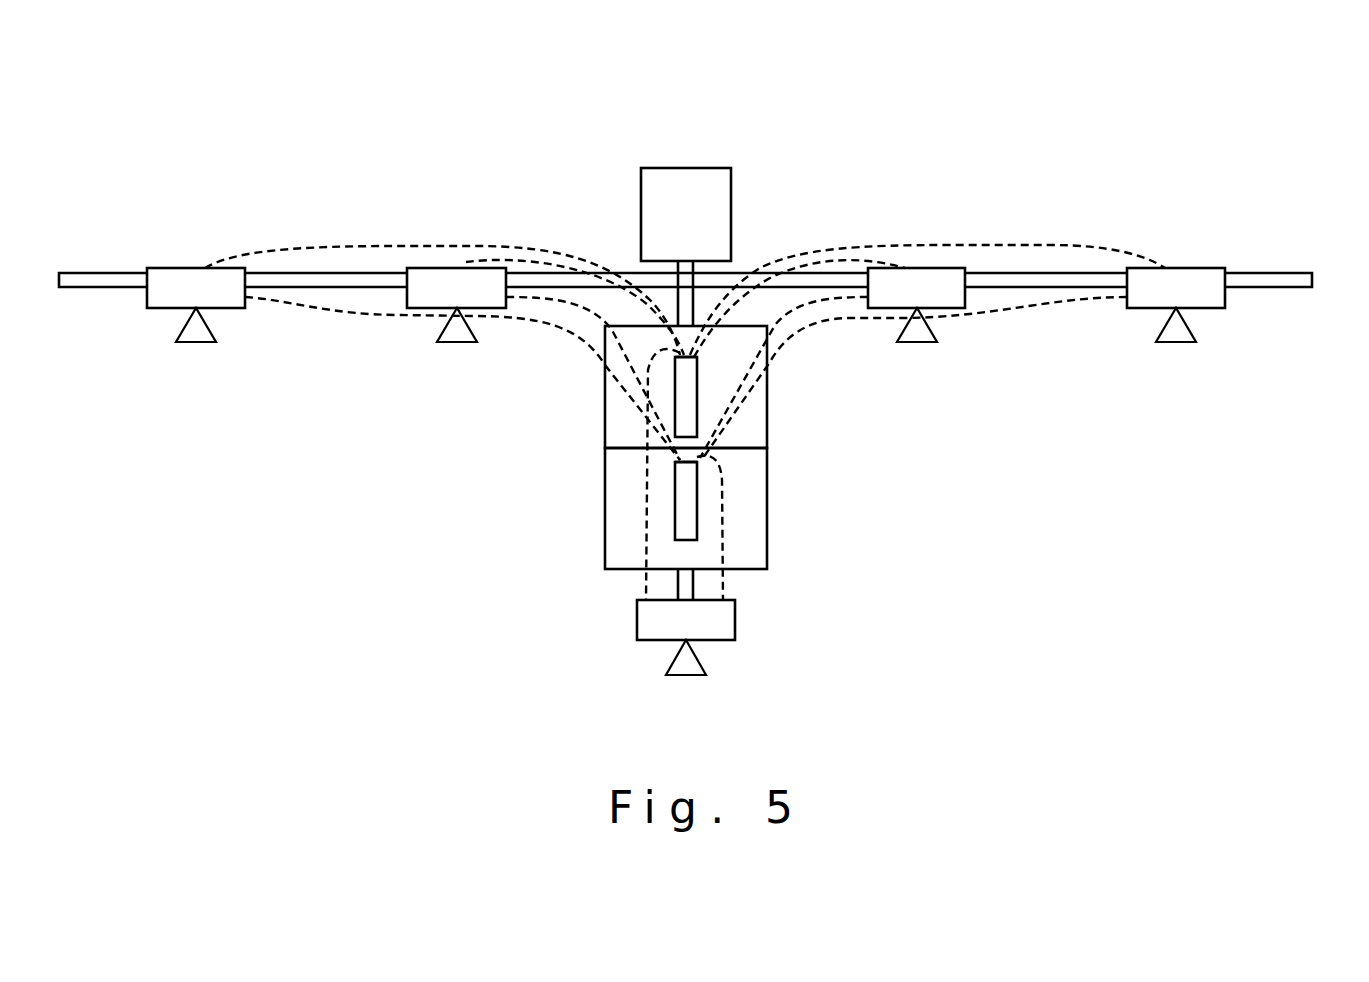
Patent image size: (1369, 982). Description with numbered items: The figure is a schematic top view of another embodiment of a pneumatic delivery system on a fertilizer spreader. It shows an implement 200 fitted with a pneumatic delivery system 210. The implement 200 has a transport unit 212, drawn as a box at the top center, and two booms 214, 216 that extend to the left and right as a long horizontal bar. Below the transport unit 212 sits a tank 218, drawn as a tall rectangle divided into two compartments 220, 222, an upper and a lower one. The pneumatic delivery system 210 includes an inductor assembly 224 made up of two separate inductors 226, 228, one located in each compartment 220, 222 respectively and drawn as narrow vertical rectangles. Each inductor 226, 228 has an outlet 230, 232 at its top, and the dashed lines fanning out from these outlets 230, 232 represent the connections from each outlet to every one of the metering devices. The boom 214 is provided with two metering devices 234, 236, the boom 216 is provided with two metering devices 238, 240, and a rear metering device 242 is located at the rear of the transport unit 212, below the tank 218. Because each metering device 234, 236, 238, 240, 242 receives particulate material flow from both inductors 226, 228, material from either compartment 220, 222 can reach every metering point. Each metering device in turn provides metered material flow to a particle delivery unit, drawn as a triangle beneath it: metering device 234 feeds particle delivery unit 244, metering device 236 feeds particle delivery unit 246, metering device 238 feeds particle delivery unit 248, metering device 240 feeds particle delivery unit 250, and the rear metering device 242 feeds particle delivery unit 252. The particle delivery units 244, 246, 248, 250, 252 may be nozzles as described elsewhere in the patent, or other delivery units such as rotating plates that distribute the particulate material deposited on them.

The implement 200 is at (218, 114).
The pneumatic delivery system 210 is at (535, 418).
The transport unit 212 is at (650, 195).
The boom 214 is at (100, 272).
The boom 216 is at (1283, 277).
The tank 218 is at (767, 520).
The compartment 220 is at (750, 423).
The compartment 222 is at (733, 525).
The inductor assembly 224 is at (623, 488).
The inductor 226 is at (697, 405).
The inductor 228 is at (698, 495).
The outlet 230 is at (693, 357).
The outlet 232 is at (683, 462).
The metering device 234 is at (185, 280).
The metering device 236 is at (480, 298).
The metering device 238 is at (930, 280).
The metering device 240 is at (1189, 278).
The rear metering device 242 is at (643, 630).
The particle delivery unit 244 is at (198, 333).
The particle delivery unit 246 is at (457, 337).
The particle delivery unit 248 is at (920, 335).
The particle delivery unit 250 is at (1180, 335).
The particle delivery unit 252 is at (690, 668).